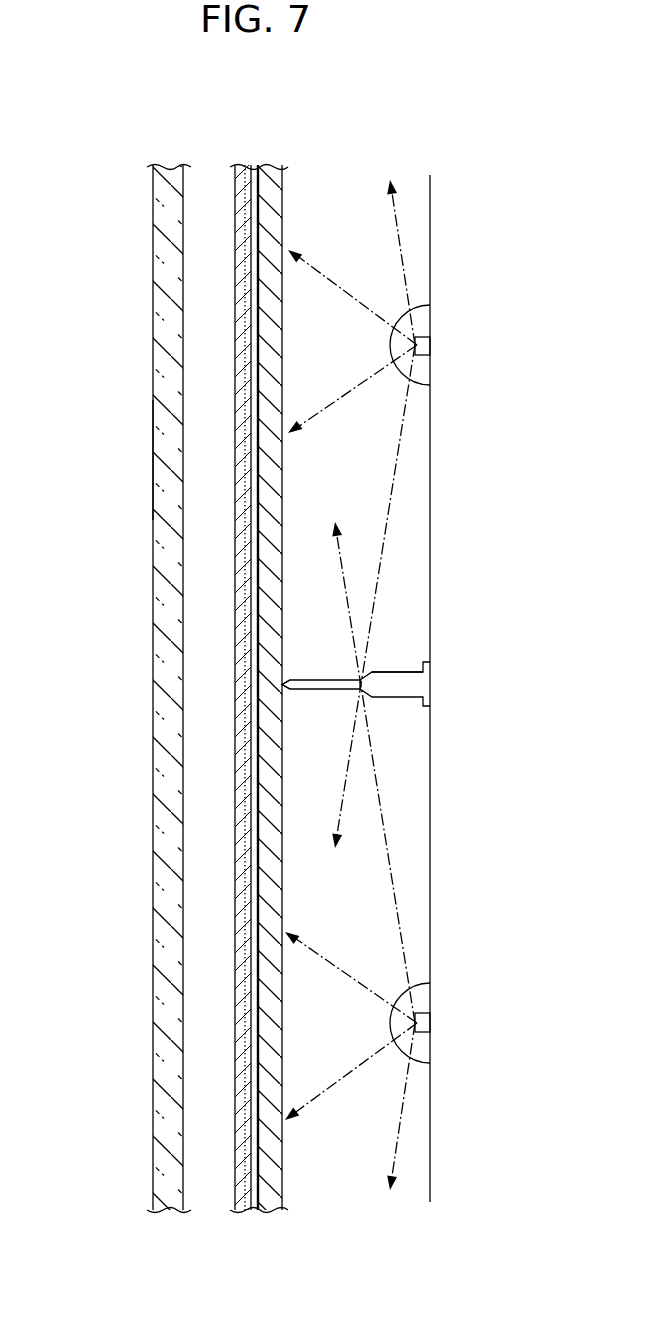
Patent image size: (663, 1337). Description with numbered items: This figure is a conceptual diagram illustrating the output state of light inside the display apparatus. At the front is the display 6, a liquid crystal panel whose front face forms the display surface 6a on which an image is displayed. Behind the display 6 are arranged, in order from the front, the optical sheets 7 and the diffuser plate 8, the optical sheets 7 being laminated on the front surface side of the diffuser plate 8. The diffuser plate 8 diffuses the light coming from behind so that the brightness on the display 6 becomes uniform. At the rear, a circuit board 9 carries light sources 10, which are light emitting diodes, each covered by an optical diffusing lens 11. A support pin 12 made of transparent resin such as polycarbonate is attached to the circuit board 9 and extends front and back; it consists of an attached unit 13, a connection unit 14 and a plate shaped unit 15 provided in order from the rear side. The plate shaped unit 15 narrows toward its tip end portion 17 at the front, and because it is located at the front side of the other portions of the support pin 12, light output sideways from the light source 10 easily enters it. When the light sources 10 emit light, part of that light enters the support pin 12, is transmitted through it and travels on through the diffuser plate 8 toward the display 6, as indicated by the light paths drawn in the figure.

The display 6 is at (155, 383).
The display surface 6a is at (155, 457).
The optical sheets 7 is at (238, 167).
The diffuser plate 8 is at (283, 195).
The circuit board 9 is at (430, 180).
The light source 10 is at (431, 345).
The optical diffusing lens 11 is at (415, 310).
The support pin 12 is at (388, 648).
The attached unit 13 is at (428, 715).
The connection unit 14 is at (403, 672).
The plate shaped unit 15 is at (308, 680).
The tip end portion 17 is at (283, 690).